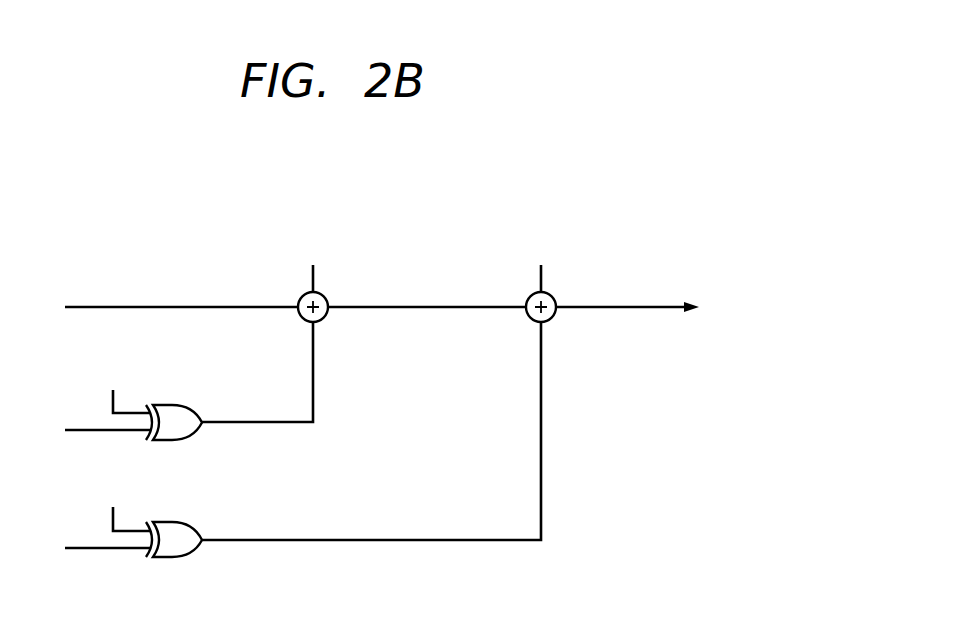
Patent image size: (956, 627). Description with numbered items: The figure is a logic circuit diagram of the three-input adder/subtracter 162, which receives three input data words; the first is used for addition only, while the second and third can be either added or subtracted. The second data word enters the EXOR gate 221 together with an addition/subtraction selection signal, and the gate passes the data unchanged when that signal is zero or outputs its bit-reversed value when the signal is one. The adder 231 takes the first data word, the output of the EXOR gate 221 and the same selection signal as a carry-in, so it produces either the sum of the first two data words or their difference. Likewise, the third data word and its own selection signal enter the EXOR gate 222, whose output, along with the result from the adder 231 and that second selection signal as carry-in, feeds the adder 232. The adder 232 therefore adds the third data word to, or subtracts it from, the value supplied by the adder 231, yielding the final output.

The three-input adder/subtracter 162 is at (352, 243).
The EXOR gate 221 is at (170, 405).
The EXOR gate 222 is at (170, 522).
The adder 231 is at (326, 318).
The adder 232 is at (554, 318).